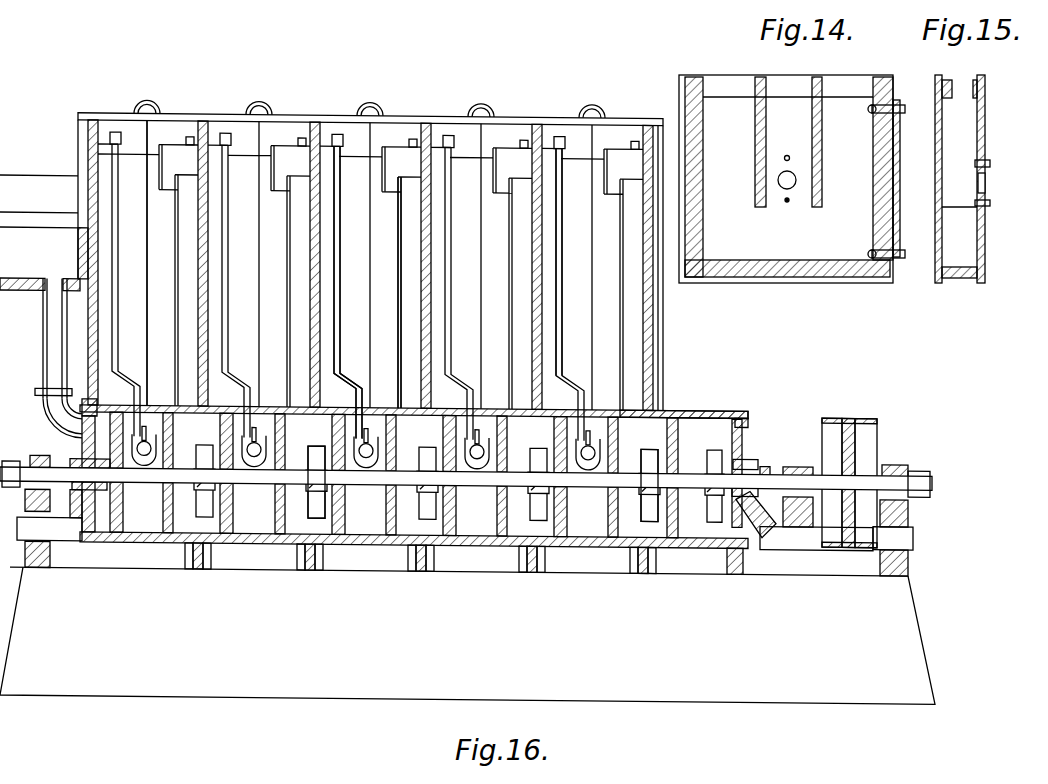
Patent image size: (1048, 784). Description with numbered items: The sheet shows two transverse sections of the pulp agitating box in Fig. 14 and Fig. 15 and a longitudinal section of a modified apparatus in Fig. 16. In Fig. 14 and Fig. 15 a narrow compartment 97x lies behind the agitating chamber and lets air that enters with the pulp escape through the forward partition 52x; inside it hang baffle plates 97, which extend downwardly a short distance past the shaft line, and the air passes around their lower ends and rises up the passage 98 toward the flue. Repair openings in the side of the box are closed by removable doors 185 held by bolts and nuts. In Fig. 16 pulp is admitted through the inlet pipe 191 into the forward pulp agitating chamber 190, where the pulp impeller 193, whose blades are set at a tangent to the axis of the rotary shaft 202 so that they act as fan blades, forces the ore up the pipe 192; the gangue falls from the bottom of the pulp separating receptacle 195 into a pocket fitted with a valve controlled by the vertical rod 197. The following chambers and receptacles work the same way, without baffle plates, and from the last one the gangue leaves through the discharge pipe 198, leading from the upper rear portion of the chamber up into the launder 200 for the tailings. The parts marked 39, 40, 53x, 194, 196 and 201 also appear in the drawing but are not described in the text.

In FIG. 14, the tank 40 is at (733, 80).
In FIG. 14, the tank wall 39 is at (703, 258).
In FIG. 14, the passage 98 is at (798, 91).
In FIG. 15, the passage 98 is at (960, 92).
In FIG. 14, the baffle plates 97 is at (756, 175).
In FIG. 15, the baffle plates 97 is at (971, 181).
In FIG. 14, the narrow compartment 97x is at (783, 205).
In FIG. 14, the forward partition 52x is at (868, 168).
In FIG. 15, the forward partition 52x is at (985, 258).
In FIG. 15, the side plate 53x is at (935, 142).
In FIG. 14, the doors 185 is at (897, 212).
In FIG. 16, the pulp agitating chamber 190 is at (708, 435).
In FIG. 16, the inlet pipe 191 is at (757, 522).
In FIG. 16, the pipe 192 is at (637, 413).
In FIG. 16, the pulp impeller 193 is at (648, 506).
In FIG. 16, the pipe 194 is at (572, 262).
In FIG. 16, the pulp separating receptacle 195 is at (467, 408).
In FIG. 16, the discharge pipe 196 is at (140, 425).
In FIG. 16, the vertical rod 197 is at (146, 238).
In FIG. 16, the discharge pipe 198 is at (43, 361).
In FIG. 16, the launder 200 is at (32, 272).
In FIG. 16, the pipe 201 is at (13, 195).
In FIG. 16, the rotary shaft 202 is at (772, 470).